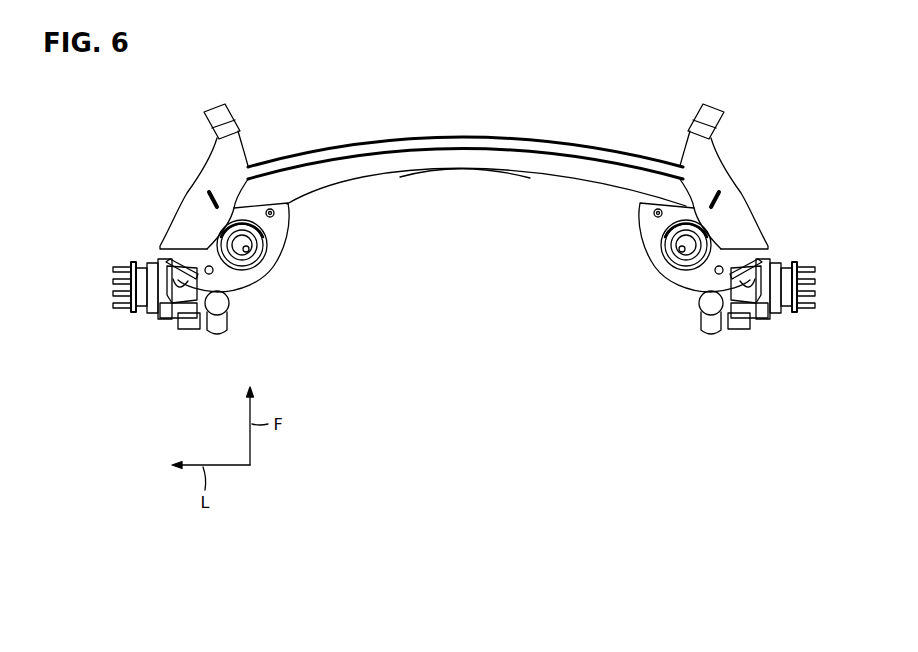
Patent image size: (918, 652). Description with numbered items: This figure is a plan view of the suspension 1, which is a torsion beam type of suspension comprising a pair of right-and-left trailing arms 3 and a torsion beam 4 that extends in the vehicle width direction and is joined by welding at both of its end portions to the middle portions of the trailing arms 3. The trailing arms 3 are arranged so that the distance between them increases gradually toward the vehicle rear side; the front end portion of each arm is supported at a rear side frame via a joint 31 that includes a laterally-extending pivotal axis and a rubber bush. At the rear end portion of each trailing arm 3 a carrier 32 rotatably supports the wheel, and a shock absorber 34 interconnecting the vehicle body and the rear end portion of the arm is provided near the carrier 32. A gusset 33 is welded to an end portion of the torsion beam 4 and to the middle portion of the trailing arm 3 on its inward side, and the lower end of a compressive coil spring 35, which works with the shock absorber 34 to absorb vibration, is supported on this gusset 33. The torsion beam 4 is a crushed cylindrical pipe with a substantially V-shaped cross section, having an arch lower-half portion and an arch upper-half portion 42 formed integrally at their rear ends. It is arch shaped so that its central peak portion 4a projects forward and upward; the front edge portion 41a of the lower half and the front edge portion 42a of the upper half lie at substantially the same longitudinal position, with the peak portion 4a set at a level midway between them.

The suspension 1 is at (641, 69).
The trailing arm 3 is at (170, 203).
The torsion beam 4 is at (449, 122).
The peak portion 4a is at (461, 170).
The joint 31 is at (230, 115).
The carrier 32 is at (117, 262).
The gusset 33 is at (286, 238).
The shock absorber 34 is at (233, 307).
The compressive coil spring 35 is at (268, 263).
The front edge portion of the arch lower-half portion 41a is at (313, 156).
The arch upper-half portion 42 is at (509, 163).
The front edge portion of the arch upper-half portion 42a is at (578, 151).